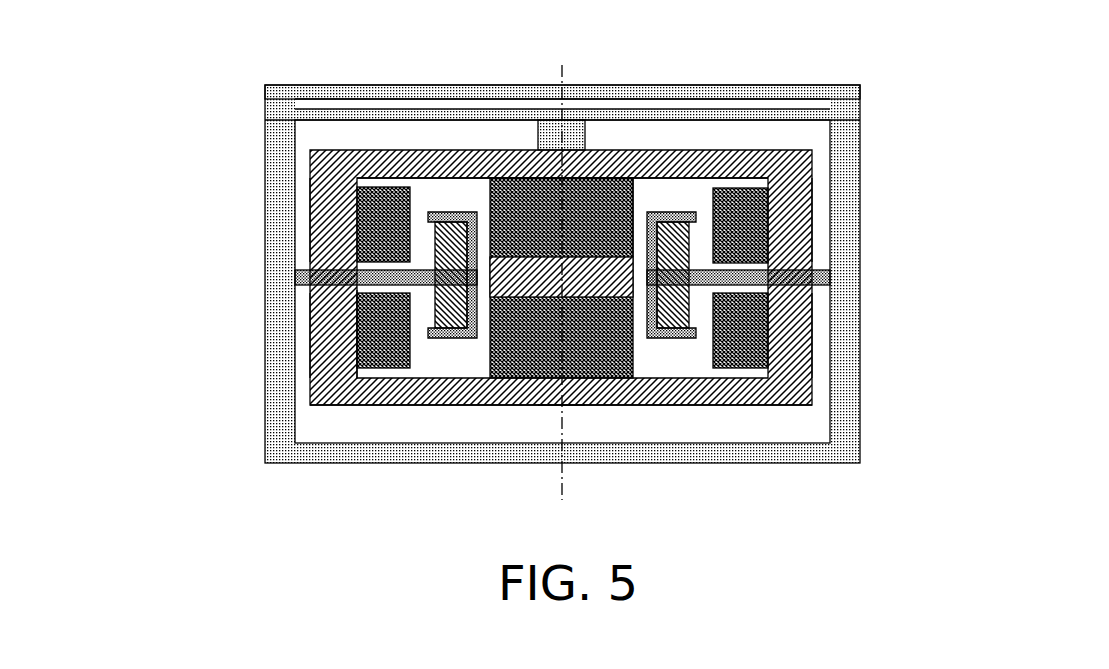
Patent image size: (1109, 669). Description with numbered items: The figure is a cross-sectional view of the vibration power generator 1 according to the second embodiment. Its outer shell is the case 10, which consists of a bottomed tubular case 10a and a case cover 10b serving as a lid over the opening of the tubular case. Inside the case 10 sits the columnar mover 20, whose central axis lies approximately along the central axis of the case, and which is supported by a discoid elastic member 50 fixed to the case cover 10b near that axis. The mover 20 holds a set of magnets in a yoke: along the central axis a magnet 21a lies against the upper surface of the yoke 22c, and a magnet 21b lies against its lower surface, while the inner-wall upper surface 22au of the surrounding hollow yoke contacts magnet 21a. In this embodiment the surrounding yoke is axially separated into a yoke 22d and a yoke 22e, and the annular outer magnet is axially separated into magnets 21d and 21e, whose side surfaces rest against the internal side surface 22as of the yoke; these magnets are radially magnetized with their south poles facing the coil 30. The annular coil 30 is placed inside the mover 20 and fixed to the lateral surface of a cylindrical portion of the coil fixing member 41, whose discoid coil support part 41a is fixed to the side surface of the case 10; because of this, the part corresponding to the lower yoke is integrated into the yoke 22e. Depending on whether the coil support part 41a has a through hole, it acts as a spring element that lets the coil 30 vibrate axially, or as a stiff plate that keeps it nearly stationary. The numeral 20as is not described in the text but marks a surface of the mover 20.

The vibration power generator 1 is at (519, 250).
The case 10 is at (140, 32).
The bottomed tubular case 10a is at (501, 274).
The case cover 10b is at (501, 69).
The elastic member 50 is at (618, 91).
The mover 20 is at (552, 311).
The housing side surface 20as is at (256, 334).
The magnet 21a is at (643, 170).
The magnet 21b is at (617, 393).
The magnet 21d is at (557, 230).
The magnet 21e is at (566, 335).
The inner-wall upper surface 22au is at (644, 111).
The yoke 22c is at (512, 174).
The yoke 22d is at (676, 214).
The internal side surface 22as is at (796, 218).
The yoke 22e is at (618, 451).
The coil 30 is at (560, 280).
The coil fixing member 41 is at (557, 307).
The coil support part 41a is at (567, 291).